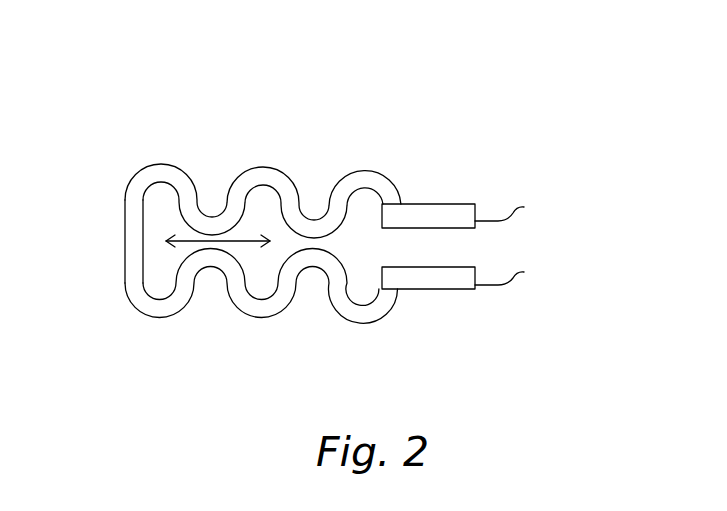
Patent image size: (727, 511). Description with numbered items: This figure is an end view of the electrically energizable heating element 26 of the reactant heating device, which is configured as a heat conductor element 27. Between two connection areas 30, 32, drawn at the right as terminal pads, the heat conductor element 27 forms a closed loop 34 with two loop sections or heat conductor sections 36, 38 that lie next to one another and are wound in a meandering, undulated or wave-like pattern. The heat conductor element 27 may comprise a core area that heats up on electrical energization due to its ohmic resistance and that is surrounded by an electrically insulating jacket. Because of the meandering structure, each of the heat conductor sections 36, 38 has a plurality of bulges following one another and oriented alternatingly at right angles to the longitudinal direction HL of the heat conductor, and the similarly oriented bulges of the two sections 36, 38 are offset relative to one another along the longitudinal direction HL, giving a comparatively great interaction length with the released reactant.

The heating element 26 is at (296, 225).
The heat conductor element 27 is at (219, 238).
The connection area 30 is at (473, 204).
The connection area 32 is at (453, 289).
The closed loop 34 is at (108, 338).
The heat conductor section 36 is at (233, 163).
The heat conductor section 38 is at (264, 333).
The longitudinal direction of the heat conductor HL is at (162, 274).